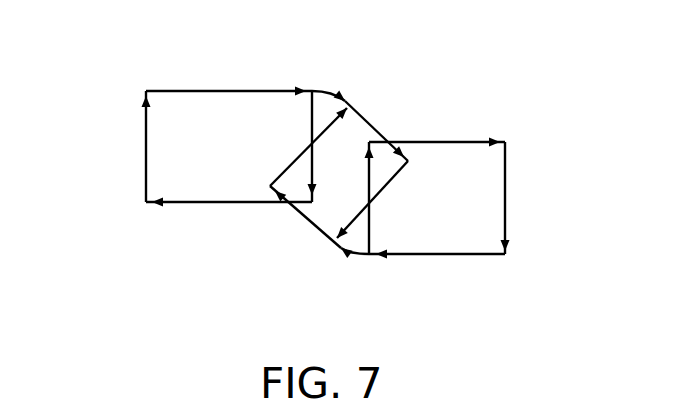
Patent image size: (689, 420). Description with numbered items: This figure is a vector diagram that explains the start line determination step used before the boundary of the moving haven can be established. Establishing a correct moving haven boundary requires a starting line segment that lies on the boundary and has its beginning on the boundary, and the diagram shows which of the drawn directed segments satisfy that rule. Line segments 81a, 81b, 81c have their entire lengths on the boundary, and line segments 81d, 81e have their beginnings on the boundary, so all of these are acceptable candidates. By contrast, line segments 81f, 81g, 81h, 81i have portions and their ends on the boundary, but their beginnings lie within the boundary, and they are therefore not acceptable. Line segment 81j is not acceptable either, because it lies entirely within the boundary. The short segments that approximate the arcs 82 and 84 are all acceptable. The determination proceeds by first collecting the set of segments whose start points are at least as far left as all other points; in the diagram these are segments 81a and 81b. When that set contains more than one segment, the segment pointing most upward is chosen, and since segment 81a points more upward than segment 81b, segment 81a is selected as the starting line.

The line segment 81a is at (146, 151).
The line segment 81b is at (214, 91).
The line segment 81c is at (483, 256).
The line segment 81d is at (302, 222).
The line segment 81e is at (378, 134).
The line segment 81f is at (202, 203).
The line segment 81g is at (349, 108).
The line segment 81h is at (478, 142).
The line segment 81i is at (384, 190).
The line segment 81j is at (367, 240).
The arc 82 is at (318, 89).
The arc 84 is at (357, 257).